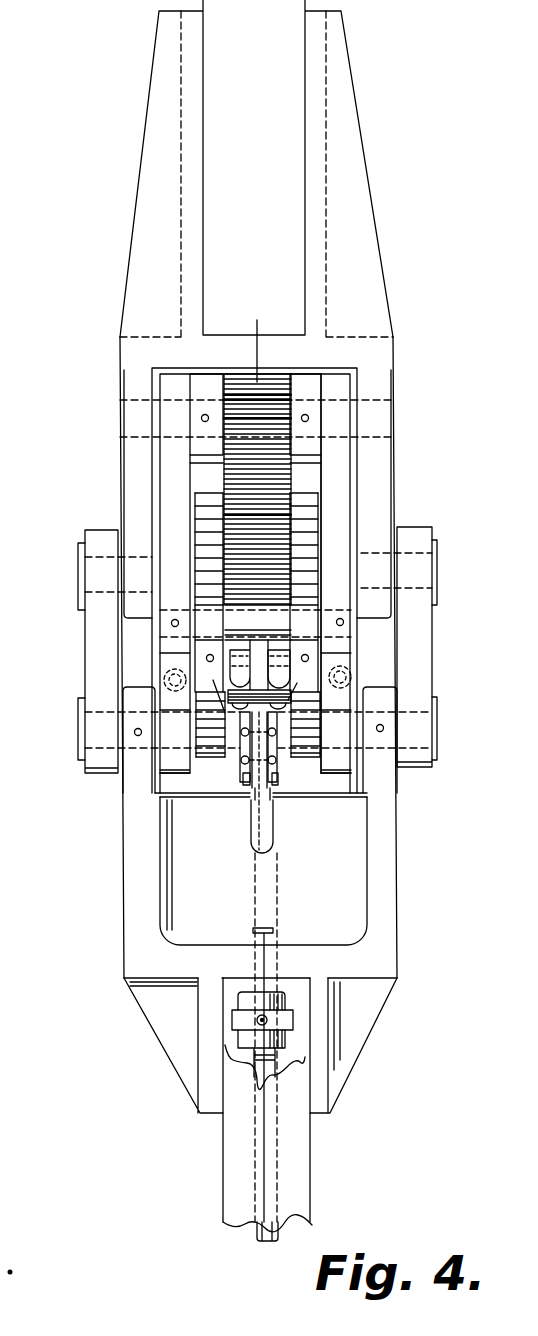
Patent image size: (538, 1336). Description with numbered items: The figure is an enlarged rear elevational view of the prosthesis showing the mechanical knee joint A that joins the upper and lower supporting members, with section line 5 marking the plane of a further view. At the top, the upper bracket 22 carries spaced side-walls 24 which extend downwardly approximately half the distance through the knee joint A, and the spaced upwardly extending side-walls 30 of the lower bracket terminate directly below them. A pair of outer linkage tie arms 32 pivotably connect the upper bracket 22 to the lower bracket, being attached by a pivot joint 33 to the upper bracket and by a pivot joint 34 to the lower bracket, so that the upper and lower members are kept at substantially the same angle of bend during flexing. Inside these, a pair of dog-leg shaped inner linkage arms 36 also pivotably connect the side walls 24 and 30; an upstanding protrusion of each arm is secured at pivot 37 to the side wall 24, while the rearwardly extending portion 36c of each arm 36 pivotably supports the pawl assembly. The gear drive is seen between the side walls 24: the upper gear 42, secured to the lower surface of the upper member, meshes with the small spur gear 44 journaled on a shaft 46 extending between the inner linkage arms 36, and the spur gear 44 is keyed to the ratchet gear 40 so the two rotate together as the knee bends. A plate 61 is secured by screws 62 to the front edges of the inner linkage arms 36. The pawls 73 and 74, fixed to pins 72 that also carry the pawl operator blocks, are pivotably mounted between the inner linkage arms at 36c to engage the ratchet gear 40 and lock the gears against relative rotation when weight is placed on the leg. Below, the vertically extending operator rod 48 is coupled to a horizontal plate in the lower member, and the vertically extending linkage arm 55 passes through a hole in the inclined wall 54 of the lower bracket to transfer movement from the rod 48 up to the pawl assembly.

The upper bracket 22 is at (125, 352).
The side-walls 24 is at (120, 470).
The side-walls 30 is at (130, 877).
The outer linkage tie arms 32 is at (85, 645).
The pivot joint 33 is at (78, 582).
The pivot joint 34 is at (80, 735).
The inner linkage arms 36 is at (167, 505).
The rearwardly extending portion 36c is at (170, 762).
The pivot 37 is at (122, 400).
The ratchet gear 40 is at (322, 835).
The upper gear 42 is at (265, 382).
The spur gear 44 is at (280, 590).
The shaft 46 is at (357, 628).
The operator rod 48 is at (277, 1150).
The wall 54 is at (290, 953).
The linkage arm 55 is at (273, 900).
The plate 61 is at (342, 782).
The screws 62 is at (165, 672).
The pin 72 is at (298, 650).
The pawl 73 is at (292, 745).
The pawl 74 is at (233, 745).
The knee joint A is at (115, 790).
The section line 5- 5 is at (255, 382).